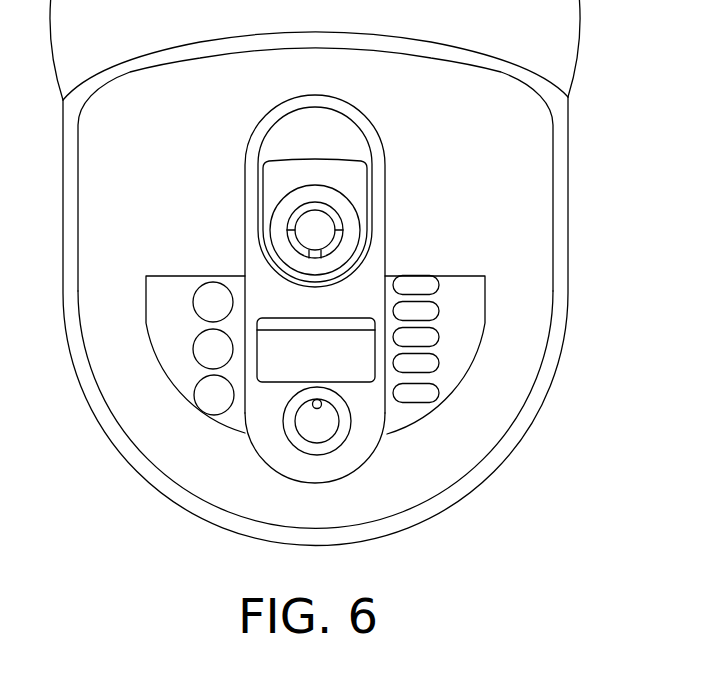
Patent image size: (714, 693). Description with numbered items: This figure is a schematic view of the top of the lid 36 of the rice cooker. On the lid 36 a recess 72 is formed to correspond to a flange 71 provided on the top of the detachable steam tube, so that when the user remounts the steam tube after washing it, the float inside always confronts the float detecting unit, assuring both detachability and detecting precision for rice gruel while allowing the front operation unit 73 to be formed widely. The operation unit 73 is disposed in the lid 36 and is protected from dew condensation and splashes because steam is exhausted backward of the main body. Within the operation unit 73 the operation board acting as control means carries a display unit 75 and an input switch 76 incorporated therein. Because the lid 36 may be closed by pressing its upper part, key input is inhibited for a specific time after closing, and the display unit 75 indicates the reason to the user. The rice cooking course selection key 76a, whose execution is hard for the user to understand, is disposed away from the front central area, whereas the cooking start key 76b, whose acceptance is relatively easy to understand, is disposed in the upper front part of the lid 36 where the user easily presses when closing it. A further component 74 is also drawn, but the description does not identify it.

The lid 36 is at (527, 180).
The flange 71 is at (340, 173).
The recess 72 is at (303, 137).
The front operation unit 73 is at (270, 404).
The rotary dial 74 is at (340, 240).
The display unit 75 is at (272, 368).
The input switch 76 is at (455, 363).
The rice cooking course selection key 76a is at (438, 312).
The cooking start key 76b is at (320, 435).